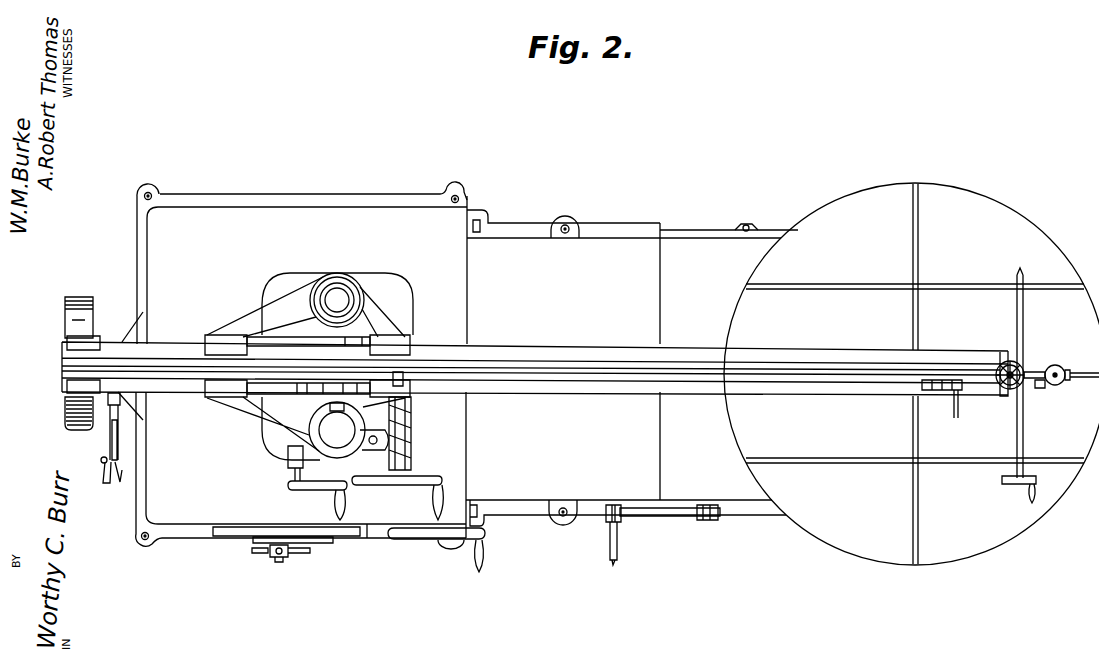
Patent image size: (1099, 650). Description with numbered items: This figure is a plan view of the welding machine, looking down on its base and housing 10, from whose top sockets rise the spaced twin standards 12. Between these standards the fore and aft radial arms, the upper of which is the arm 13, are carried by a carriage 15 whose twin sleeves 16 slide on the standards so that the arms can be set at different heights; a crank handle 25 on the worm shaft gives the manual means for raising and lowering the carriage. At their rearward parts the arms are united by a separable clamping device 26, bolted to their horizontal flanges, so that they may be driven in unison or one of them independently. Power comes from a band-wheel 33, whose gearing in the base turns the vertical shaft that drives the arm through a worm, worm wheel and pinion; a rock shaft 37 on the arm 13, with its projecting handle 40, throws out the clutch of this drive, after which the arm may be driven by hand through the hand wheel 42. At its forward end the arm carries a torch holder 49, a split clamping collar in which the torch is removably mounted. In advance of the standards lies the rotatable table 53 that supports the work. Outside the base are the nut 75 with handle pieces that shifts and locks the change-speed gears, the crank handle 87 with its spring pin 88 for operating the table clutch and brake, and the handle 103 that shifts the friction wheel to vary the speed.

The base and housing 10 is at (343, 277).
The twin standards 12 is at (352, 290).
The upper arm 13 is at (585, 352).
The carriage 15 is at (246, 314).
The twin sleeves 16 is at (362, 293).
The crank handle 25 is at (315, 489).
The clamping device 26 is at (75, 387).
The band-wheel 33 is at (89, 300).
The rock shaft 37 is at (598, 386).
The handle 40 is at (962, 416).
The hand wheel 42 is at (427, 479).
The torch holder 49 is at (1058, 366).
The rotatable table 53 is at (911, 374).
The nut 75 is at (280, 562).
The crank handle 87 is at (674, 519).
The spring pin 88 is at (613, 563).
The handle 103 is at (424, 542).